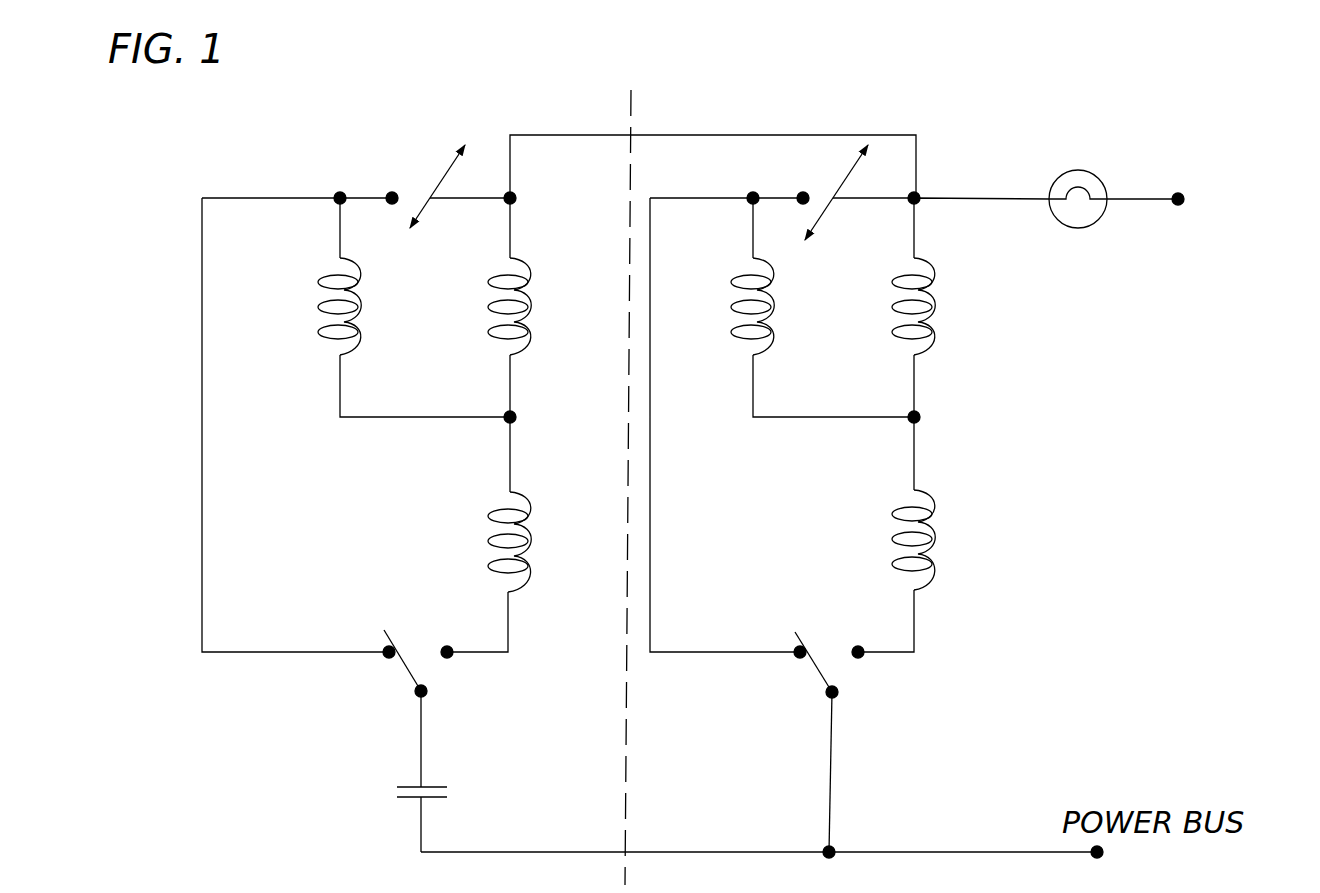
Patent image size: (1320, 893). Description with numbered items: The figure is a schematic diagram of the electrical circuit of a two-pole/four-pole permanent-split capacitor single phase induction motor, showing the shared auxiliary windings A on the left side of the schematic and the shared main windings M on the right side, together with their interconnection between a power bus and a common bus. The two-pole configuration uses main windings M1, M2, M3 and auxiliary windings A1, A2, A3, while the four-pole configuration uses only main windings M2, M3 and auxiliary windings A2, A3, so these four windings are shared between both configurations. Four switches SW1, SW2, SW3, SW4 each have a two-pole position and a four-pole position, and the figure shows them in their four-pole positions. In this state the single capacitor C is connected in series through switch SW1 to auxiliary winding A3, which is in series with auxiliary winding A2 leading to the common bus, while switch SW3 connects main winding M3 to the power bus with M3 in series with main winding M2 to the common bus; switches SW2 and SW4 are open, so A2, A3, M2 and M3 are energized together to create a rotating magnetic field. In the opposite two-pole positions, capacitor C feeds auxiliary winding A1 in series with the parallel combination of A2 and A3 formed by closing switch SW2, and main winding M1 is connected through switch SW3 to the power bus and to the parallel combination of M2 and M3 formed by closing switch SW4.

The shared auxiliary windings A is at (150, 449).
The shared main windings M is at (1070, 443).
The auxiliary winding A1 is at (522, 578).
The auxiliary winding A2 is at (526, 295).
The auxiliary winding A3 is at (318, 337).
The main winding M1 is at (930, 553).
The main winding M2 is at (930, 328).
The main winding M3 is at (733, 334).
The switch SW1 is at (405, 665).
The switch SW2 is at (431, 196).
The switch SW3 is at (817, 665).
The switch SW4 is at (834, 197).
The capacitor C is at (436, 786).